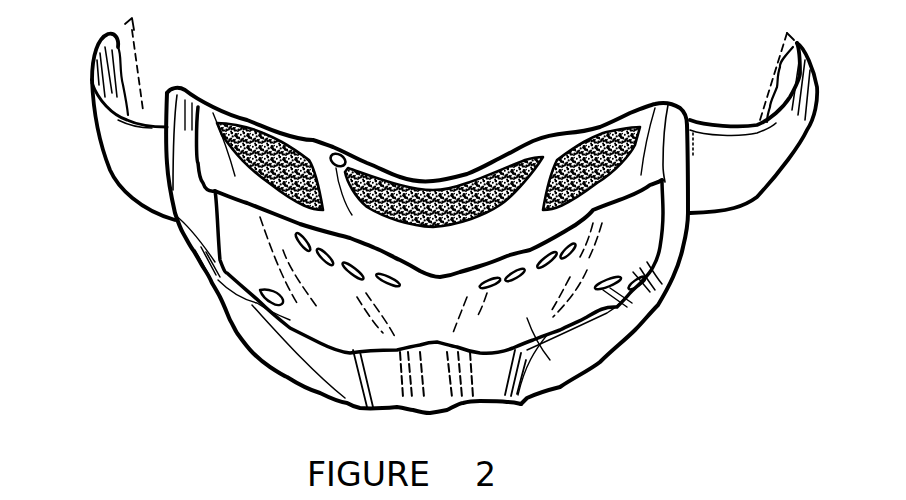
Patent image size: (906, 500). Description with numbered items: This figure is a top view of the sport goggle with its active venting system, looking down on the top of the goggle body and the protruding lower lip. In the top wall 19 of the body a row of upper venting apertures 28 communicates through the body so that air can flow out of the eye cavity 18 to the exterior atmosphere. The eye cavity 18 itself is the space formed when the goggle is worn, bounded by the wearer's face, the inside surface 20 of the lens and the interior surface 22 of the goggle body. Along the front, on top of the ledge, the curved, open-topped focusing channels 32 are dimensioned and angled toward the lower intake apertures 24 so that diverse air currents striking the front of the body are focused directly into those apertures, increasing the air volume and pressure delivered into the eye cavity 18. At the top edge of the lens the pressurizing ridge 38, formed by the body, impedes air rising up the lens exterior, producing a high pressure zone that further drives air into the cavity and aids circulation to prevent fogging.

The eye cavity 18 is at (527, 317).
The top wall 19 is at (337, 157).
The inside surface of lens 20 is at (355, 318).
The interior surface of goggle body 22 is at (503, 251).
The lower intake apertures 24 is at (603, 293).
The upper venting apertures 28 is at (250, 143).
The focusing channels 32 is at (523, 405).
The pressurizing ridge 38 is at (448, 278).